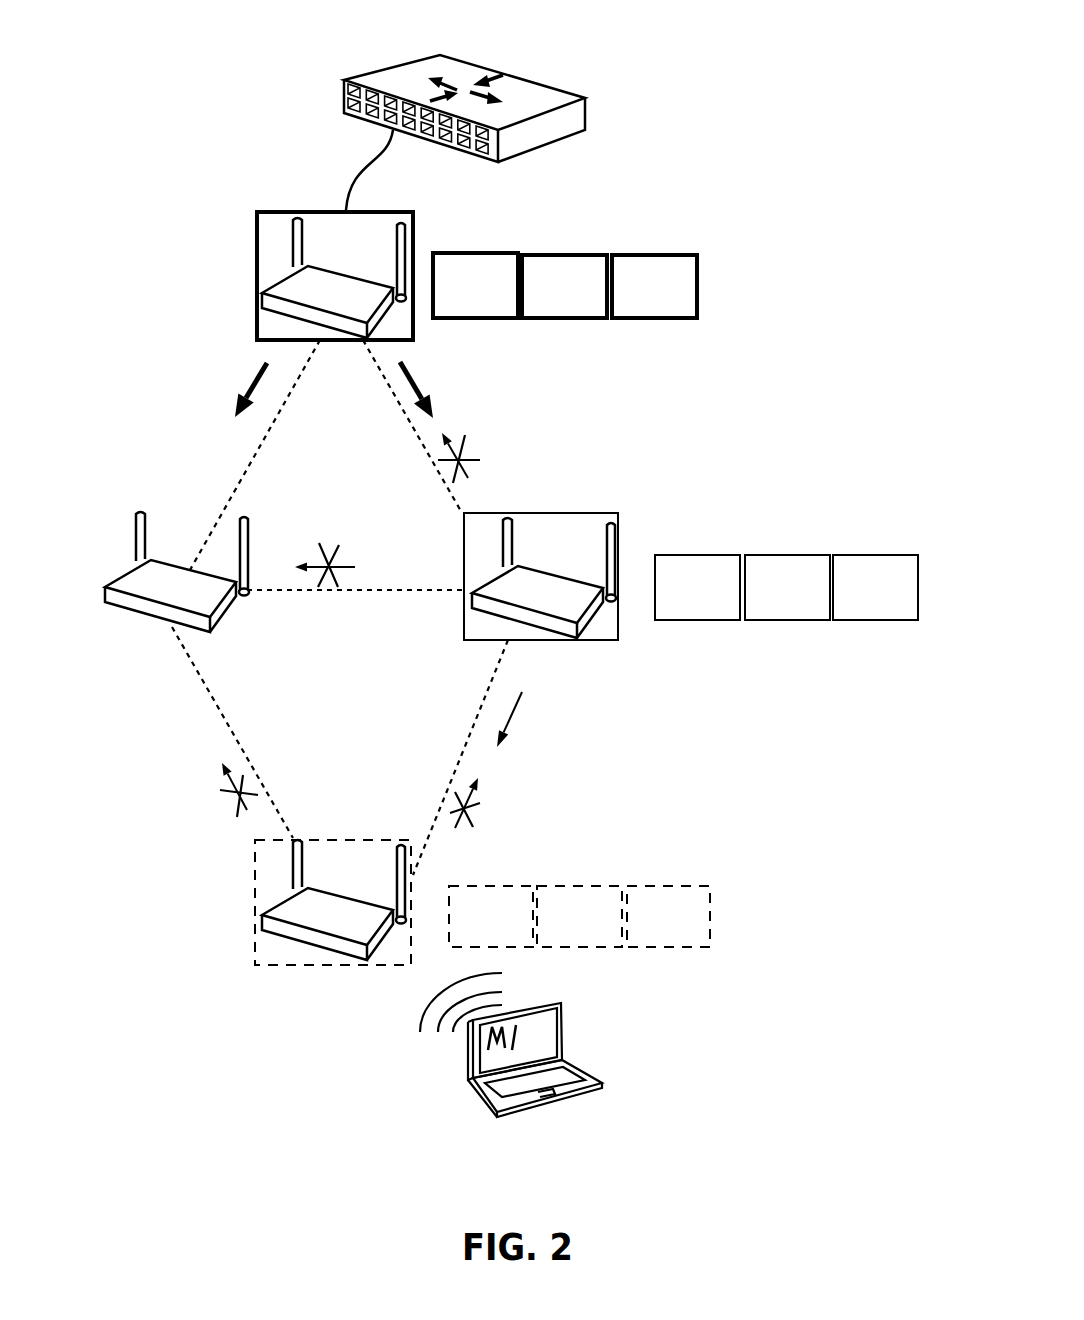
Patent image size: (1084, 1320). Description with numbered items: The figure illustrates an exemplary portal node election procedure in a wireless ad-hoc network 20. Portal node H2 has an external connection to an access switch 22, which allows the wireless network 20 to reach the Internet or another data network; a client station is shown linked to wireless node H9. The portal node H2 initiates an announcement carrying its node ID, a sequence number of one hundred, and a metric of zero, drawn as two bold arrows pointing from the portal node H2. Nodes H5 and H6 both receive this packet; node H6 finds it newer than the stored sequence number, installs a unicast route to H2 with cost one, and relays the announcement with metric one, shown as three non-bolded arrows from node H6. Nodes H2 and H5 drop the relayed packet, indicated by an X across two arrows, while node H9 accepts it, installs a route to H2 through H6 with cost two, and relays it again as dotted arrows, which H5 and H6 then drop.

The wireless ad-hoc network 20 is at (496, 664).
The access switch 22 is at (555, 88).
The portal node H2 is at (335, 276).
The wireless node H5 is at (177, 572).
The wireless node H6 is at (541, 576).
The wireless node H9 is at (333, 902).